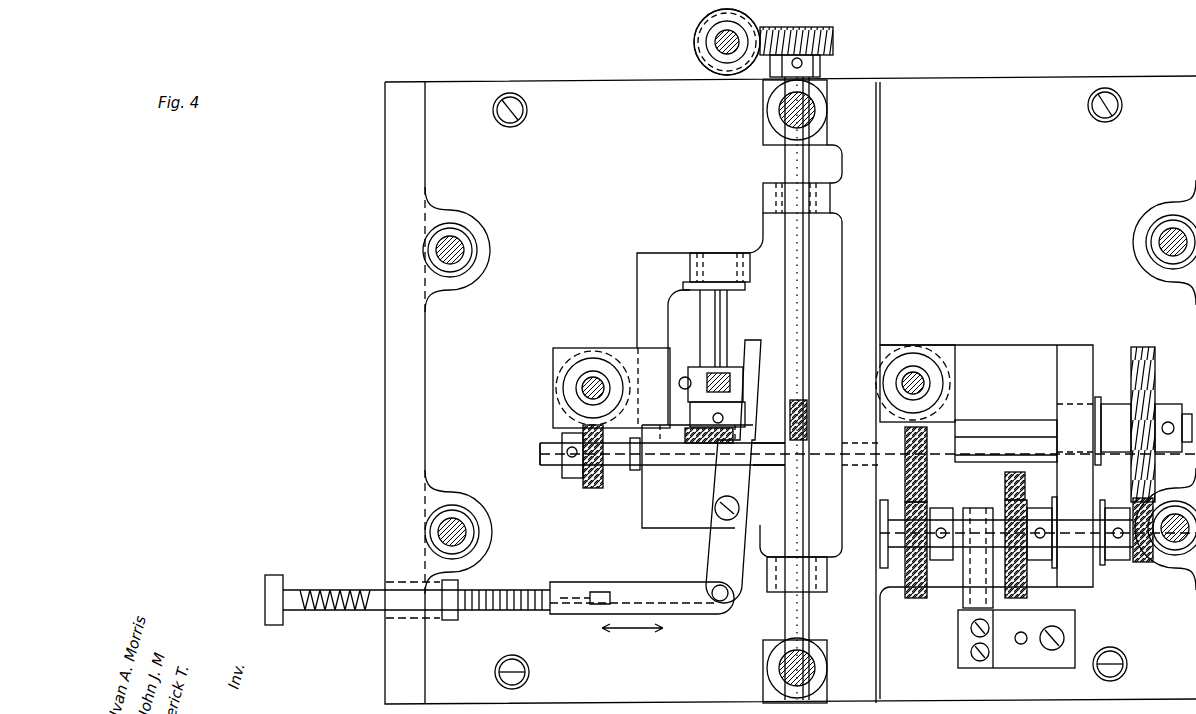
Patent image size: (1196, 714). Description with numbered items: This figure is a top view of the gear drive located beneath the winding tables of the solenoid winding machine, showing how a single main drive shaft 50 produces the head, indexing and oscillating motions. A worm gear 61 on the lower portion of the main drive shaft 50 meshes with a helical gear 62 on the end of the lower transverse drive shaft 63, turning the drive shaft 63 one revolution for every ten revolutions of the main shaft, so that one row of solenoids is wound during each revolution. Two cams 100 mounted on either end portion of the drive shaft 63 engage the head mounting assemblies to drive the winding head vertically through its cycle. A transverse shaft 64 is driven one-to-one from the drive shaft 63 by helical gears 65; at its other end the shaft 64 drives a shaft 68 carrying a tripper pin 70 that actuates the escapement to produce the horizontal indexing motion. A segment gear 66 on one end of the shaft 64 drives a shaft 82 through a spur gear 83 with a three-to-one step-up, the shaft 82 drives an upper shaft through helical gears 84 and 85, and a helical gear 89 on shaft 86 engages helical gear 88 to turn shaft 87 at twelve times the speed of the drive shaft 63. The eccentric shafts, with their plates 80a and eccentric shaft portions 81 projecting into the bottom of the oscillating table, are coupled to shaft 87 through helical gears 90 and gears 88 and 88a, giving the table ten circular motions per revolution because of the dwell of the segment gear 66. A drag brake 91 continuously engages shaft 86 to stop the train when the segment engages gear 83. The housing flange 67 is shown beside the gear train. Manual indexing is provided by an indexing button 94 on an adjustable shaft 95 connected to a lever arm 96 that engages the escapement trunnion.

The main drive shaft 50 is at (716, 42).
The worm gear 61 is at (698, 57).
The helical gear 62 is at (820, 33).
The lower transverse drive shaft 63 is at (808, 315).
The transverse shaft 64 is at (636, 465).
The helical gears 65 is at (815, 406).
The segment gear 66 is at (1142, 348).
The housing flange 67 is at (1078, 348).
The shaft 68 is at (724, 332).
The tripper pin 70 is at (685, 389).
The plates 80a is at (568, 380).
The eccentric shaft portions 81 is at (578, 393).
The shaft 82 is at (1113, 510).
The spur gear 83 is at (1143, 562).
The helical gear 84 is at (1022, 478).
The helical gear 85 is at (1030, 510).
The shaft 86 is at (958, 490).
The shaft 87 is at (547, 475).
The helical gear 88 is at (930, 445).
The gear 88a is at (598, 488).
The helical gear 89 is at (915, 598).
The helical gears 90 is at (575, 356).
The drag brake 91 is at (978, 508).
The indexing button 94 is at (290, 575).
The adjustable shaft 95 is at (565, 582).
The lever arm 96 is at (715, 548).
The cams 100 is at (772, 126).